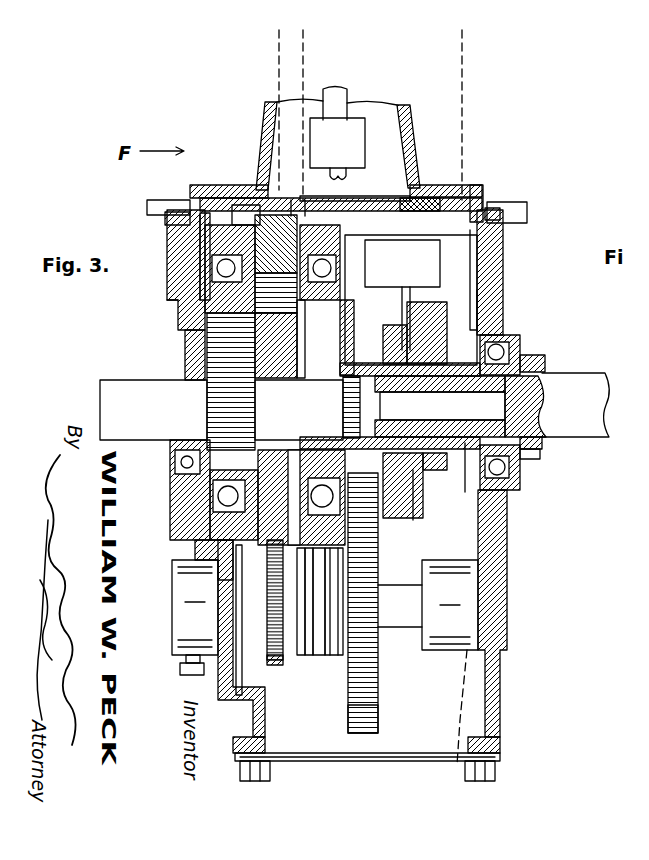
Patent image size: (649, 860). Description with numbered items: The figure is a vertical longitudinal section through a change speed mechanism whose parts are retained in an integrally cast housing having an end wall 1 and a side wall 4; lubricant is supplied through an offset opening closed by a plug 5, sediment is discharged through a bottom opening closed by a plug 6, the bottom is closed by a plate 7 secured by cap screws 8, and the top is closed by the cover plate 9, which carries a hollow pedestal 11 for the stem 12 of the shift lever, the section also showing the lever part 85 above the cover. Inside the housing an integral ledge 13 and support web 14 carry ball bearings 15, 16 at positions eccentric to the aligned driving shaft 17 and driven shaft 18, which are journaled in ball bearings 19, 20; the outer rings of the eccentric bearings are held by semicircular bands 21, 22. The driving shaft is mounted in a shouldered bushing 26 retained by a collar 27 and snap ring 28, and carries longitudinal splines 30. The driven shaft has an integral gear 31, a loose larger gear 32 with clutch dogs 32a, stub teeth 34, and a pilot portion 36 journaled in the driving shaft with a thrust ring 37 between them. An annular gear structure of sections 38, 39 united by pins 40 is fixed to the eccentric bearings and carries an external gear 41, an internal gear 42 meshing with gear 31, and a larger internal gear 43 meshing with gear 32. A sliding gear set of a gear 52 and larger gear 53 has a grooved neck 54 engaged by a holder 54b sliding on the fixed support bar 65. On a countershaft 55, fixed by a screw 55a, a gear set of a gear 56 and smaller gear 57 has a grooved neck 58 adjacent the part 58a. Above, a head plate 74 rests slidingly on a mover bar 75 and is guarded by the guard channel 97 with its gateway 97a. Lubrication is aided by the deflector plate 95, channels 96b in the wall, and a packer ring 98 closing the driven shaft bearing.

The end wall 1 is at (505, 298).
The side wall 4 is at (517, 724).
The plug 5 is at (392, 497).
The plug 6 is at (280, 316).
The plate 7 is at (315, 762).
The cap screws 8 is at (252, 782).
The cover plate 9 is at (123, 327).
The hollow pedestal 11 is at (266, 119).
The stem 12 is at (347, 100).
The ledge 13 is at (252, 580).
The support web 14 is at (360, 530).
The ball bearing 15 is at (165, 215).
The ball bearing 16 is at (336, 240).
The driving shaft 17 is at (597, 376).
The driven shaft 18 is at (115, 385).
The ball bearing 19 is at (519, 482).
The ball bearing 20 is at (178, 482).
The semicircular band 21 is at (262, 204).
The semicircular band 22 is at (330, 227).
The shouldered bushing 26 is at (542, 442).
The collar 27 is at (523, 349).
The snap ring 28 is at (540, 466).
The longitudinal splines 30 is at (460, 480).
The gear 31 is at (230, 405).
The gear 32 is at (300, 335).
The dogs 32a is at (315, 339).
The stub teeth 34 is at (333, 407).
The pilot portion 36 is at (500, 396).
The thrust ring 37 is at (383, 396).
The section 38 is at (258, 196).
The section 39 is at (350, 196).
The pins 40 is at (262, 556).
The external gear 41 is at (297, 590).
The internal gear 42 is at (178, 298).
The internal gear 43 is at (345, 300).
The gear 52 is at (378, 339).
The gear 53 is at (449, 294).
The grooved neck 54 is at (415, 496).
The holder 54b is at (492, 205).
The countershaft 55 is at (406, 630).
The screw 55a is at (186, 676).
The gear 56 is at (356, 724).
The gear 57 is at (275, 668).
The grooved annular neck 58 is at (334, 642).
The gear flange 58a is at (308, 642).
The support bar 65 is at (505, 249).
The head plate 74 is at (401, 212).
The mover bar 75 is at (527, 213).
The switch box 85 is at (366, 130).
The deflector plate 95 is at (217, 200).
The channels 96b is at (168, 270).
The guard channel 97 is at (433, 198).
The gateway 97a is at (336, 200).
The packer ring 98 is at (200, 322).